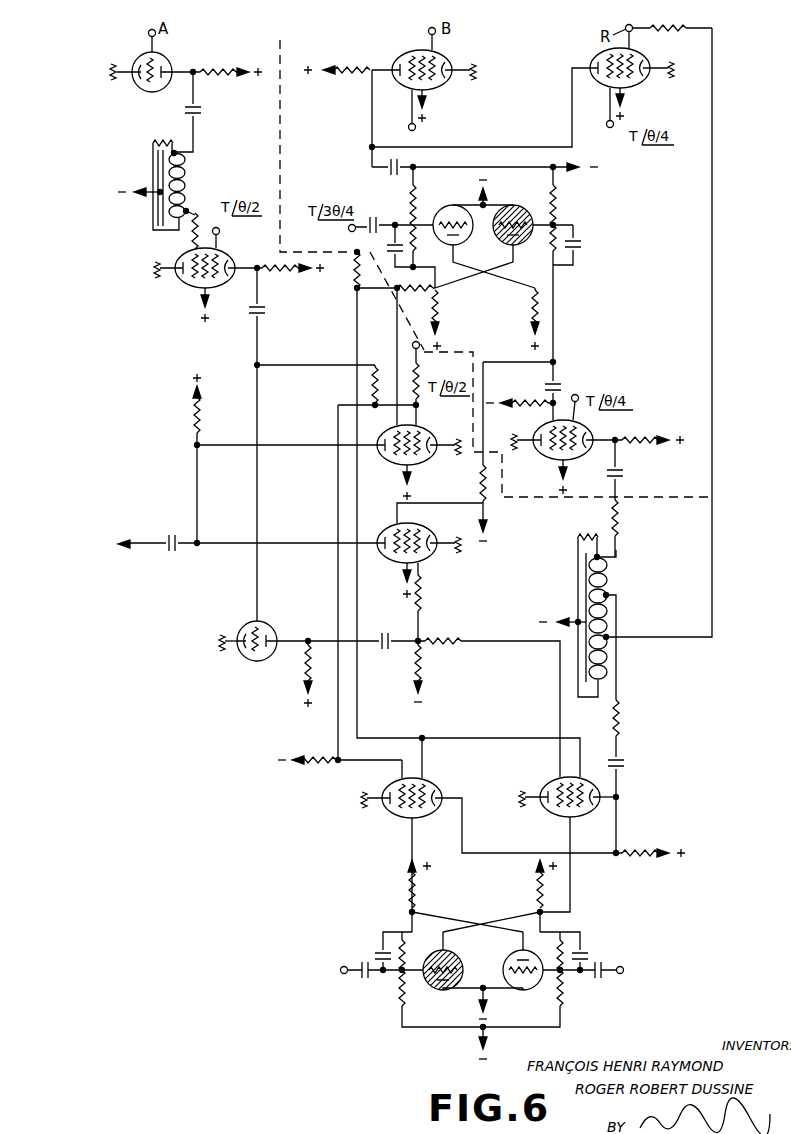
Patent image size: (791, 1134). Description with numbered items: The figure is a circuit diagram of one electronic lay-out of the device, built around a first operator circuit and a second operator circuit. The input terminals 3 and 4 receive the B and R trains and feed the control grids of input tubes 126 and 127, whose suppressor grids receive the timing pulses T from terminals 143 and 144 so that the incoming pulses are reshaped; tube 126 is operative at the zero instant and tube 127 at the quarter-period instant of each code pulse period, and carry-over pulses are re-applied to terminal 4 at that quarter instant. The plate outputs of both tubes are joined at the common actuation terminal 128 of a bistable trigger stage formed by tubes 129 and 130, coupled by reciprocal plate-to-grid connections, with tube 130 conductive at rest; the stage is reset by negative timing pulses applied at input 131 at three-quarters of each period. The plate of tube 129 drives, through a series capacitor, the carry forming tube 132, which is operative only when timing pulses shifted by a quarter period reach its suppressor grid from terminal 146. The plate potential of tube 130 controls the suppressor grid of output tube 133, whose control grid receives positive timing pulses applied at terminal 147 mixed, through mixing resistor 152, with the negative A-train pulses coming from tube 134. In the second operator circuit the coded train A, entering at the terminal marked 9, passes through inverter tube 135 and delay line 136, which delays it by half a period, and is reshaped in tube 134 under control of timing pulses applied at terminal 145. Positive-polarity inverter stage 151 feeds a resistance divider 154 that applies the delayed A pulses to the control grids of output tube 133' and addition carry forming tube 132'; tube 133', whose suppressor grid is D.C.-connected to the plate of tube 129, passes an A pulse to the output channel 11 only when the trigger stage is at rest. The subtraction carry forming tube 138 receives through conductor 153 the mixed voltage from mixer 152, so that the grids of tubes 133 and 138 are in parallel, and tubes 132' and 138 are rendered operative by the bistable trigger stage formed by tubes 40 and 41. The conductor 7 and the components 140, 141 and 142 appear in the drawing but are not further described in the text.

The terminal A 9 is at (149, 33).
The input terminal 3 is at (428, 32).
The input terminal 4 is at (632, 30).
The feedback conductor 7 is at (658, 334).
The output channel 11 is at (133, 541).
The inverter tube 135 is at (152, 90).
The delay line 136 is at (186, 187).
The re-shaping tube 134 is at (190, 290).
The terminal 145 is at (233, 237).
The input tube 126 is at (445, 88).
The terminal 143 is at (408, 131).
The common actuation terminal 128 is at (369, 147).
The input tube 127 is at (594, 53).
The terminal 144 is at (615, 134).
The trigger stage tube 129 is at (451, 205).
The trigger stage tube 130 is at (513, 205).
The asymmetrical actuation input 131 is at (352, 232).
The mixing resistor 152 is at (380, 360).
The terminal 147 is at (419, 349).
The output tube 133 is at (329, 462).
The output tube 133' is at (430, 572).
The carry forming tube 132 is at (597, 457).
The addition carry forming tube 132' is at (566, 854).
The terminal 146 is at (576, 394).
The transformer coil 140 is at (578, 556).
The resistor 141 is at (616, 550).
The coil tap 142 is at (619, 612).
The inverter stage 151 is at (267, 662).
The resistance divider 154 is at (424, 655).
The conductor 153 is at (356, 764).
The subtraction carry forming tube 138 is at (440, 813).
The trigger stage tube 41 is at (444, 992).
The trigger stage tube 40 is at (528, 992).